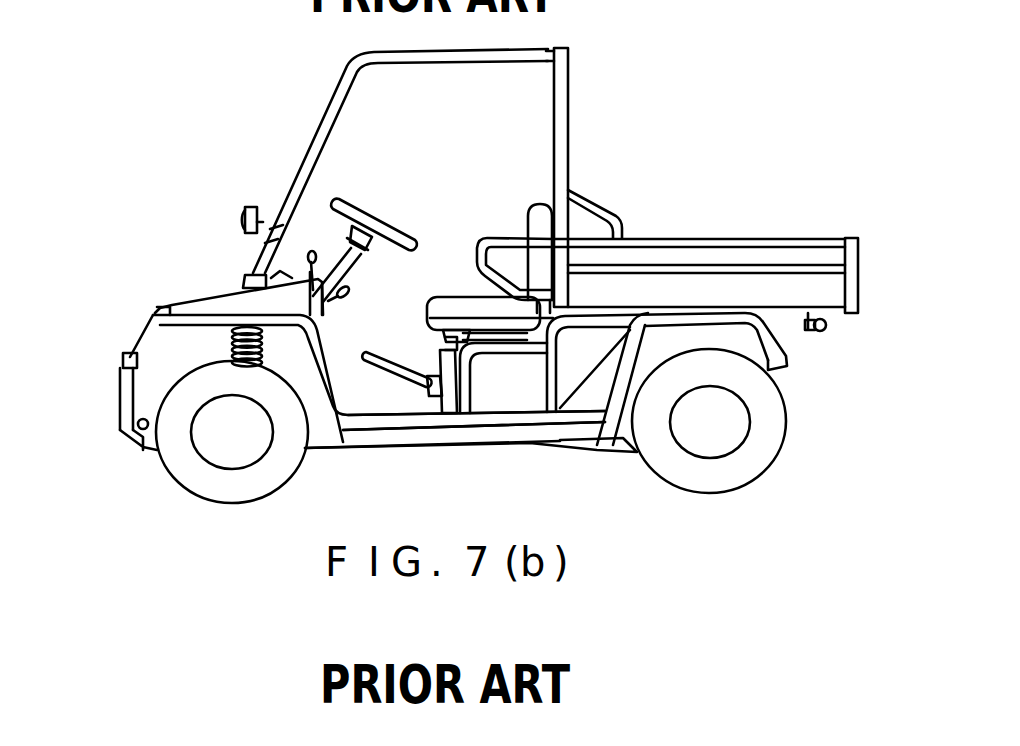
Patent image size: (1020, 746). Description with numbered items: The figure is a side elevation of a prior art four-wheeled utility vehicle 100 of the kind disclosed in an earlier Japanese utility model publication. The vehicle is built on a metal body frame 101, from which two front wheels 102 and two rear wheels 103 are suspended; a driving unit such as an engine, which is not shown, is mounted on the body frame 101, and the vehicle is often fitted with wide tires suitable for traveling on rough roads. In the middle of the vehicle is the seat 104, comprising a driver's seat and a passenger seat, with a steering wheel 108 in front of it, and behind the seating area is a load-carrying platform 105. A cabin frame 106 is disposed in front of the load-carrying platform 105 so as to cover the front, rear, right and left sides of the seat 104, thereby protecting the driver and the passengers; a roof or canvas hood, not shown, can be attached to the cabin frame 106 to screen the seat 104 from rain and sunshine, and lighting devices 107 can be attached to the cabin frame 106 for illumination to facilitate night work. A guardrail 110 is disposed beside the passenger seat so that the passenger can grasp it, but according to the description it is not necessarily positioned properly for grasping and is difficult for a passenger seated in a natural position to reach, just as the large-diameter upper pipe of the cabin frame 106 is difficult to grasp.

The four-wheeled utility vehicle 100 is at (581, 46).
The body frame 101 is at (422, 436).
The front wheels 102 is at (182, 470).
The rear wheels 103 is at (752, 466).
The seat 104 is at (526, 208).
The load-carrying platform 105 is at (757, 282).
The cabin frame 106 is at (336, 92).
The lighting devices 107 is at (253, 204).
The steering wheel 108 is at (372, 200).
The guardrail 110 is at (473, 255).